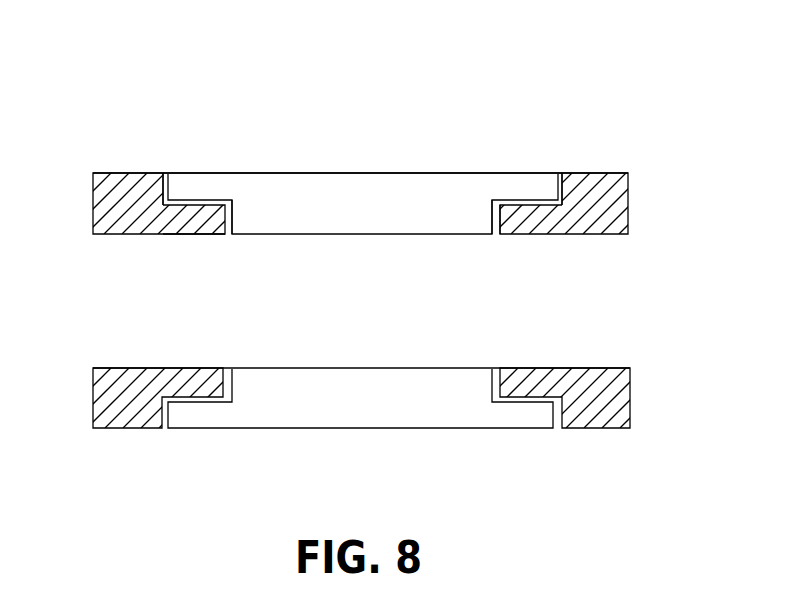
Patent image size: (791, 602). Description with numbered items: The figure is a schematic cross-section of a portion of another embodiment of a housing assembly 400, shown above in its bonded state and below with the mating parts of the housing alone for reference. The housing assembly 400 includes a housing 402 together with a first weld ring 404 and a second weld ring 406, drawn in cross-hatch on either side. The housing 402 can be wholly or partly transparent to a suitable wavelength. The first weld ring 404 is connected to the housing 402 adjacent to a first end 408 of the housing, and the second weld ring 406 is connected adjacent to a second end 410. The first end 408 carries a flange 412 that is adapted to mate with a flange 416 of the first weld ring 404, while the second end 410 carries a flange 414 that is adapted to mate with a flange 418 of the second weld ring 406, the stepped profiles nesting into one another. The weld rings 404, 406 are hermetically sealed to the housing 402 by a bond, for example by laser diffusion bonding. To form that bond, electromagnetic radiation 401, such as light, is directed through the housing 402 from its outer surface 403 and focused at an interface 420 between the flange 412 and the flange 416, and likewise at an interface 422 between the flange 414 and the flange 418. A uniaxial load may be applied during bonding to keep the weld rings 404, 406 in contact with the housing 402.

The housing assembly 400 is at (456, 52).
The electromagnetic radiation 401 is at (197, 145).
The housing 402 is at (378, 173).
The outer surface 403 is at (253, 172).
The first weld ring 404 is at (135, 172).
The second weld ring 406 is at (593, 172).
The first end 408 is at (162, 172).
The second end 410 is at (562, 172).
The flange 412 is at (172, 228).
The flange 414 is at (545, 207).
The flange 416 is at (185, 235).
The flange 418 is at (496, 232).
The interface 420 is at (208, 203).
The interface 422 is at (497, 188).